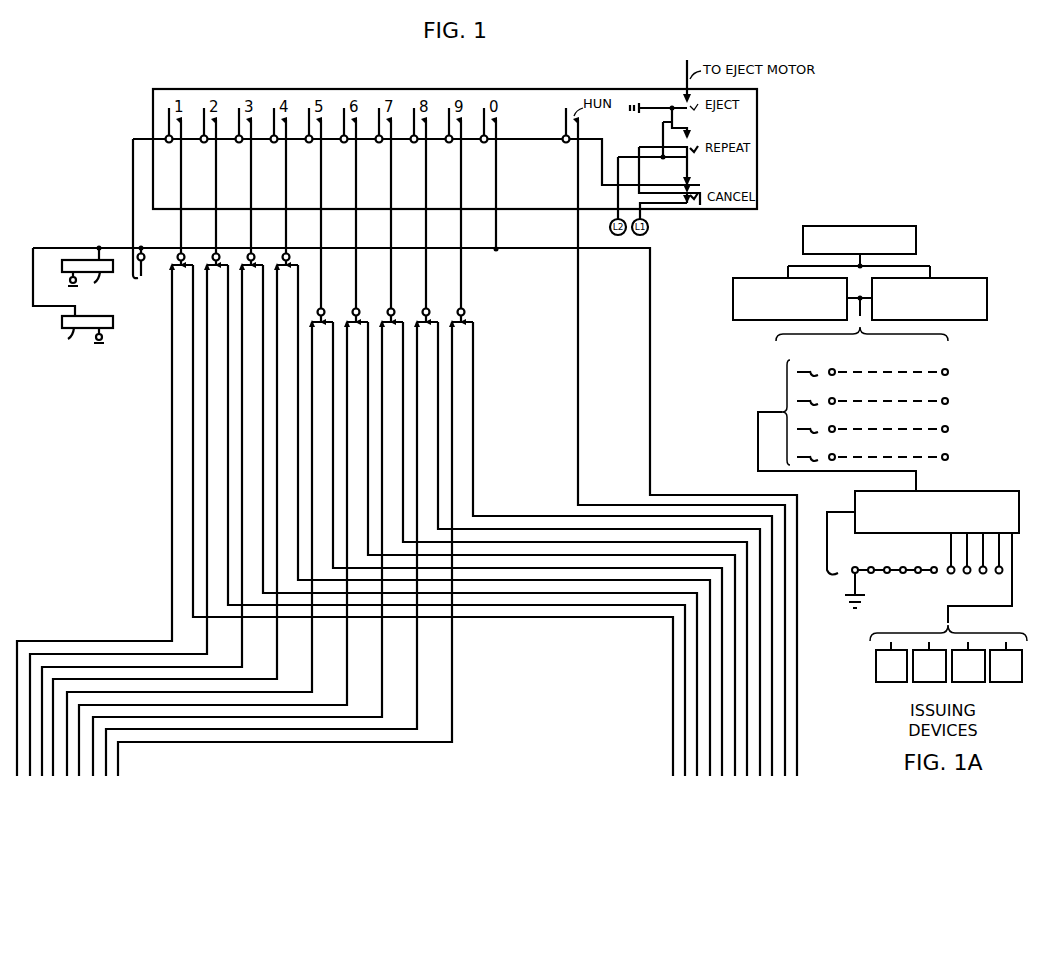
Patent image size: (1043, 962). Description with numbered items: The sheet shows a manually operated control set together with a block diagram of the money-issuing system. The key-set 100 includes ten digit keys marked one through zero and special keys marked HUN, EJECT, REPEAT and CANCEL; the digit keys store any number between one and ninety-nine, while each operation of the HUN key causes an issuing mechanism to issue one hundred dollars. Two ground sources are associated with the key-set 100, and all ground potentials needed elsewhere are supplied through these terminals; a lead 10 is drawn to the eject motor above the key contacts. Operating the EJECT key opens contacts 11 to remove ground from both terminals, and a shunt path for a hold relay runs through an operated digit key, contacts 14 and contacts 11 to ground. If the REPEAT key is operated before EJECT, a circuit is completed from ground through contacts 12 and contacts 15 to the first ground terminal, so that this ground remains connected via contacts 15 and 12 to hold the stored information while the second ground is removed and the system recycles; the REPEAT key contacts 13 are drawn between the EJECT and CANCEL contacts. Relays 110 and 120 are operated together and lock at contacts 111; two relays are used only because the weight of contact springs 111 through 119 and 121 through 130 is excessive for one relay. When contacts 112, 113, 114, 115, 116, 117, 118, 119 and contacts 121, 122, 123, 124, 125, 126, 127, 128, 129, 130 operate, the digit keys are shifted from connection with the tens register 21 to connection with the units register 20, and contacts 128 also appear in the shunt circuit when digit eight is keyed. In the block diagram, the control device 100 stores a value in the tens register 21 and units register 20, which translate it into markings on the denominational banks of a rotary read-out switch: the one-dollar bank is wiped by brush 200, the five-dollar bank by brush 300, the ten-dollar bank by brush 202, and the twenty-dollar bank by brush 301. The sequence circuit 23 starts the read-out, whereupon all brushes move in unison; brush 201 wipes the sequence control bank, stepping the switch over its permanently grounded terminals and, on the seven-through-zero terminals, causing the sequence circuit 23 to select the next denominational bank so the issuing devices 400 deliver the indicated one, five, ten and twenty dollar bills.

In FIG. 1, the key-set 100 is at (714, 212).
In FIG. 1A, the key-set 100 is at (917, 243).
In FIG. 1, the eject motor lead 10 is at (688, 104).
In FIG. 1, the contacts 11 is at (692, 110).
In FIG. 1, the contacts 12 is at (696, 137).
In FIG. 1, the repeat contact 13 is at (692, 155).
In FIG. 1, the contacts 14 is at (683, 186).
In FIG. 1, the contacts 15 is at (676, 205).
In FIG. 1, the relay 110 is at (95, 280).
In FIG. 1, the contacts 111 is at (137, 278).
In FIG. 1, the contacts 112 is at (178, 257).
In FIG. 1, the contacts 113 is at (187, 260).
In FIG. 1, the contacts 114 is at (211, 278).
In FIG. 1, the contacts 115 is at (222, 260).
In FIG. 1, the contacts 116 is at (246, 278).
In FIG. 1, the contacts 117 is at (257, 260).
In FIG. 1, the contacts 118 is at (281, 278).
In FIG. 1, the contacts 119 is at (292, 260).
In FIG. 1, the relay 120 is at (70, 339).
In FIG. 1, the contacts 121 is at (318, 313).
In FIG. 1, the contacts 122 is at (323, 330).
In FIG. 1, the contacts 123 is at (353, 313).
In FIG. 1, the contacts 124 is at (358, 330).
In FIG. 1, the contacts 125 is at (388, 313).
In FIG. 1, the contacts 126 is at (393, 330).
In FIG. 1, the contacts 127 is at (423, 313).
In FIG. 1, the contacts 128 is at (428, 330).
In FIG. 1, the contacts 129 is at (458, 313).
In FIG. 1, the contacts 130 is at (463, 330).
In FIG. 1A, the units register 20 is at (733, 308).
In FIG. 1A, the tens register 21 is at (976, 281).
In FIG. 1A, the brush 200 is at (801, 371).
In FIG. 1A, the brush 300 is at (801, 400).
In FIG. 1A, the brush 202 is at (801, 428).
In FIG. 1A, the brush 301 is at (801, 456).
In FIG. 1A, the sequence circuit 23 is at (1002, 492).
In FIG. 1A, the brush 201 is at (840, 569).
In FIG. 1A, the issuing devices 400 is at (876, 667).